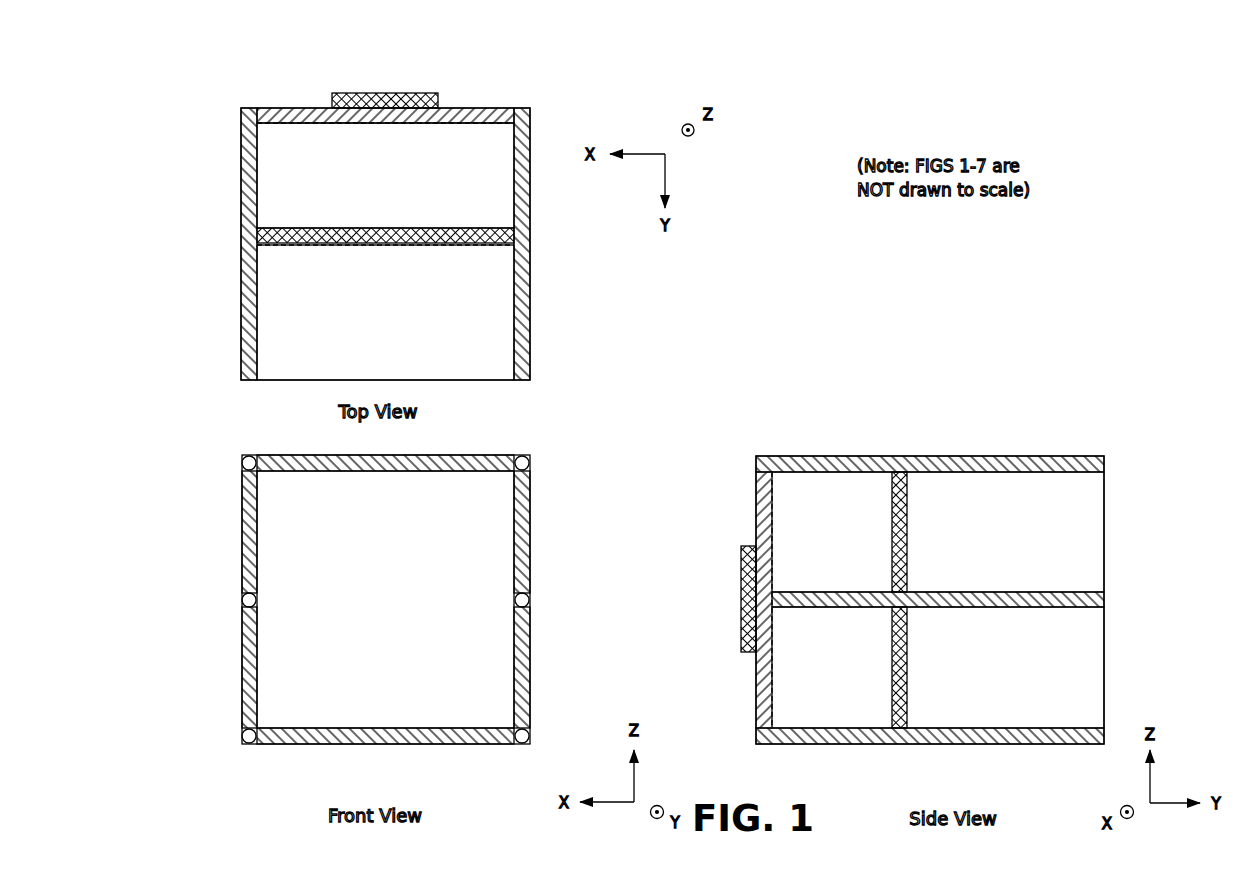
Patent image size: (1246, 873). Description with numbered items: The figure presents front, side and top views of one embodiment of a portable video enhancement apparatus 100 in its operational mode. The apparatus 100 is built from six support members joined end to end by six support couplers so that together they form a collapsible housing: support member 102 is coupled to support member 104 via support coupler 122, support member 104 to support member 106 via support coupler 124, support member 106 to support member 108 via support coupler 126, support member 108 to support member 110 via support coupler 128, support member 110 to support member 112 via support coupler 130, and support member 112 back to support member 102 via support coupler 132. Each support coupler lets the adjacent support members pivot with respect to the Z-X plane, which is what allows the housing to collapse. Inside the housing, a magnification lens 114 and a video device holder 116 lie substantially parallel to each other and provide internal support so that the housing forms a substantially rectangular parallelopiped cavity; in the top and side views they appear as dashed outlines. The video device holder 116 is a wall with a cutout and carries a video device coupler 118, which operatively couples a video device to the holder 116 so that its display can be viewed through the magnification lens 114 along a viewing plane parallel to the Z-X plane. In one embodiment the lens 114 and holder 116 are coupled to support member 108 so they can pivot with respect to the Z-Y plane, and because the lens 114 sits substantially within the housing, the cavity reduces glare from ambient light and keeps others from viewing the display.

The portable video enhancement apparatus 100 is at (570, 107).
The support member 102 is at (340, 193).
The support member 104 is at (527, 532).
The support member 106 is at (527, 663).
The support member 108 is at (393, 738).
The support member 110 is at (247, 664).
The support member 112 is at (248, 528).
The magnification lens 114 is at (330, 240).
The video device holder 116 is at (461, 113).
The video device coupler 118 is at (369, 93).
The support coupler 122 is at (523, 298).
The support coupler 124 is at (529, 602).
The support coupler 126 is at (529, 736).
The support coupler 128 is at (243, 736).
The support coupler 130 is at (243, 600).
The support coupler 132 is at (248, 160).